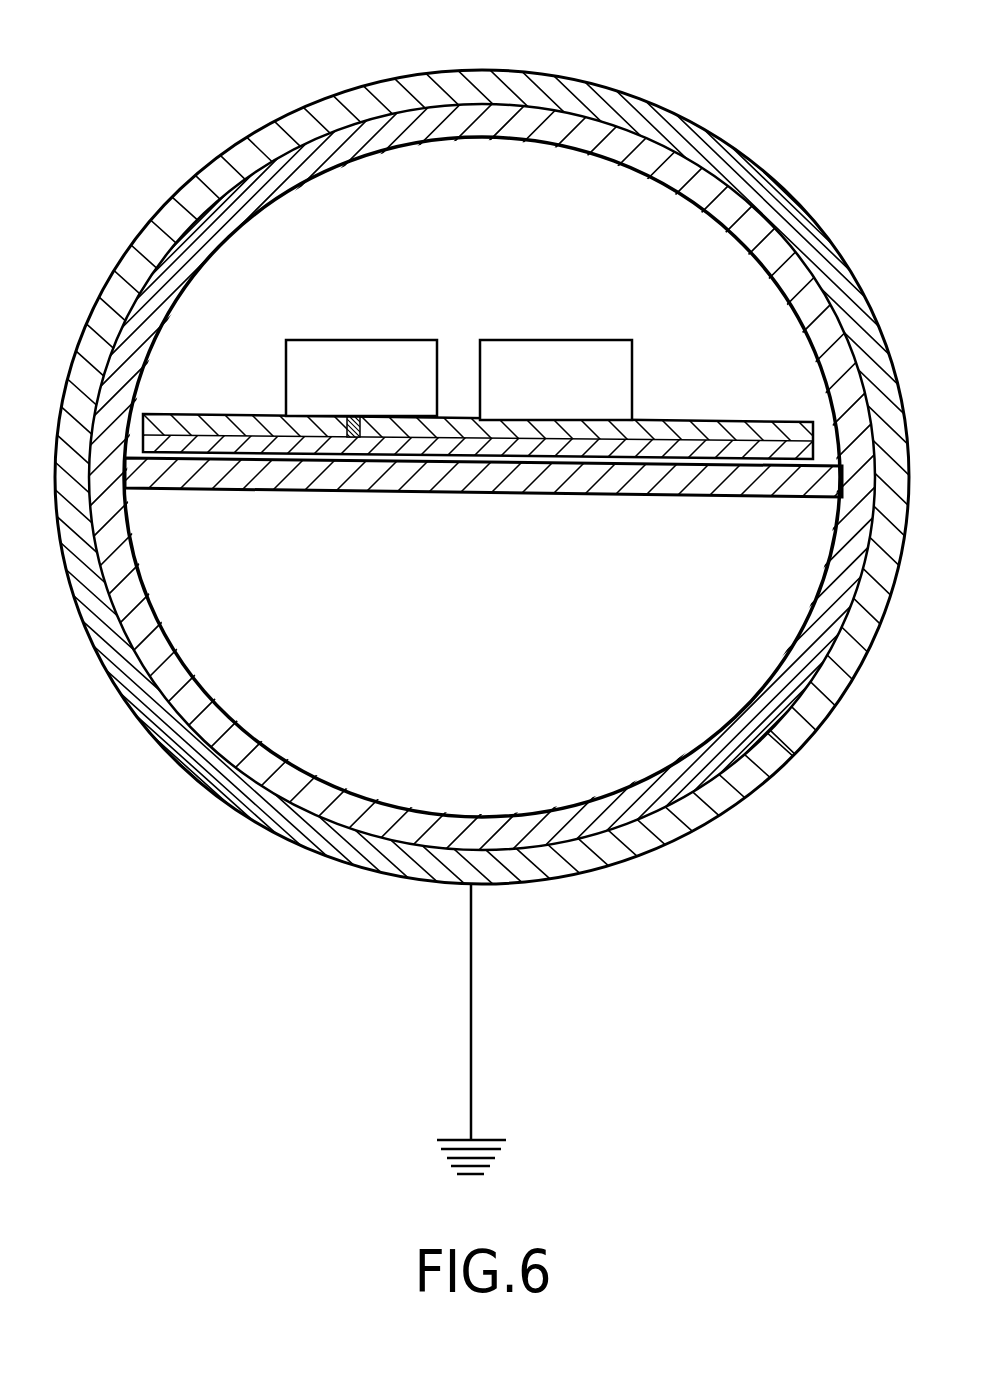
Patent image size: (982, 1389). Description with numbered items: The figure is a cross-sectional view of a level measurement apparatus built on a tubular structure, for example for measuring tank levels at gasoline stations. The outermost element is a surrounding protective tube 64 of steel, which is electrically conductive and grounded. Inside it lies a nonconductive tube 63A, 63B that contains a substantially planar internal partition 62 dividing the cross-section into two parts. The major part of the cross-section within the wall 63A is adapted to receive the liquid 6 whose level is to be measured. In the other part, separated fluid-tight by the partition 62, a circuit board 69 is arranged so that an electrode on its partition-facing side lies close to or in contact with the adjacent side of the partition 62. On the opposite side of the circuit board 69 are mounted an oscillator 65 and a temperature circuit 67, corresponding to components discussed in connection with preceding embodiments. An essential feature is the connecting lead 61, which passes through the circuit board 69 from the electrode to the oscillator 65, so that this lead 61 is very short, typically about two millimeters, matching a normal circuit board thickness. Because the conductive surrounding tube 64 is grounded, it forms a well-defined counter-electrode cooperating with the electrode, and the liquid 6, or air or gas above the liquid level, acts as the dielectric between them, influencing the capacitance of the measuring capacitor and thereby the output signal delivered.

The liquid 6 is at (498, 778).
The connecting lead 61 is at (320, 442).
The partition 62 is at (450, 489).
The nonconductive tube wall 63A is at (640, 795).
The nonconductive tube wall 63B is at (538, 118).
The protective tube 64 is at (688, 133).
The oscillator 65 is at (356, 340).
The temperature circuit 67 is at (550, 340).
The circuit board 69 is at (695, 430).